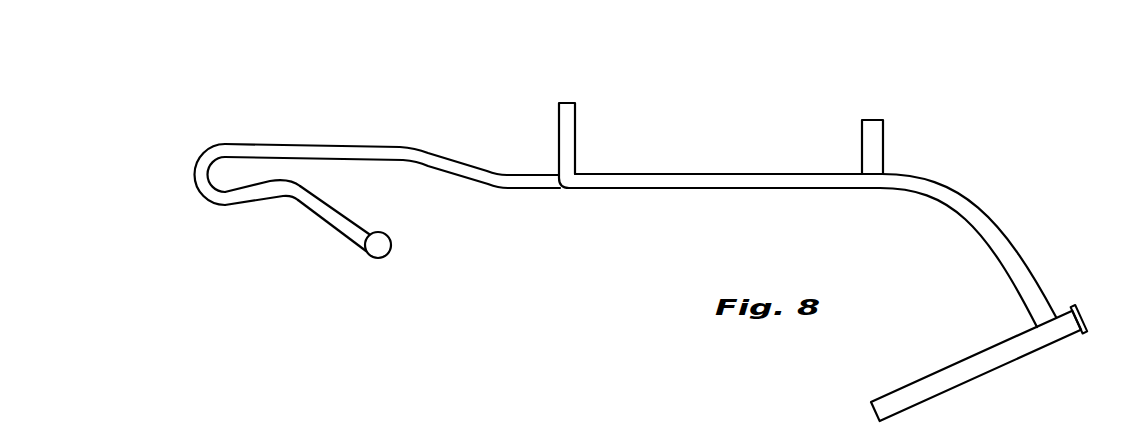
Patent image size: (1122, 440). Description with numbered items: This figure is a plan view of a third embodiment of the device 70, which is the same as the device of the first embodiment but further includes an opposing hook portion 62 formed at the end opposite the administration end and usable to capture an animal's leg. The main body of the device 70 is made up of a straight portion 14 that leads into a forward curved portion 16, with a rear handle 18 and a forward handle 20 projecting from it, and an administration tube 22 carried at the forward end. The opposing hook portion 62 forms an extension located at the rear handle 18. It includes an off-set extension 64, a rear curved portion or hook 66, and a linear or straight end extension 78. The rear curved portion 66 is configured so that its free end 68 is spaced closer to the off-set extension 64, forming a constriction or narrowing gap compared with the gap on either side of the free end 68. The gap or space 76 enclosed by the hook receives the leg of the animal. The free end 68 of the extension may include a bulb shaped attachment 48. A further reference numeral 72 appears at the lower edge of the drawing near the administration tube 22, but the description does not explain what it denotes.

The straight portion 14 is at (637, 173).
The forward curved portion 16 is at (1010, 252).
The rear handle 18 is at (568, 132).
The forward handle 20 is at (878, 138).
The administration tube 22 is at (987, 362).
The bulb shaped attachment 48 is at (383, 252).
The opposing hook portion 62 is at (188, 126).
The off-set extension 64 is at (445, 152).
The rear curved portion 66 is at (203, 179).
The free end 68 is at (294, 188).
The device 70 is at (1006, 171).
The bar end 72 is at (964, 437).
The gap 76 is at (235, 170).
The straight end extension 78 is at (330, 205).